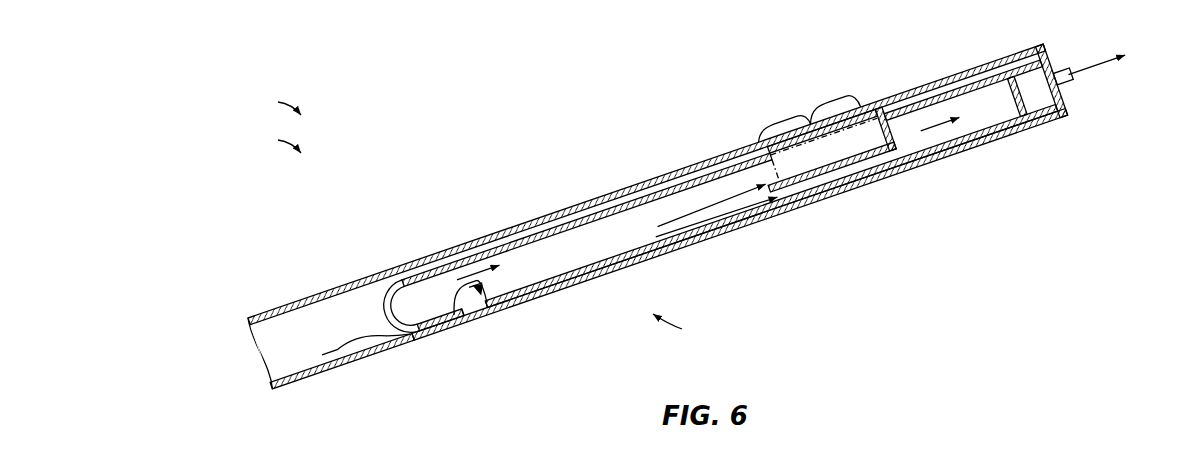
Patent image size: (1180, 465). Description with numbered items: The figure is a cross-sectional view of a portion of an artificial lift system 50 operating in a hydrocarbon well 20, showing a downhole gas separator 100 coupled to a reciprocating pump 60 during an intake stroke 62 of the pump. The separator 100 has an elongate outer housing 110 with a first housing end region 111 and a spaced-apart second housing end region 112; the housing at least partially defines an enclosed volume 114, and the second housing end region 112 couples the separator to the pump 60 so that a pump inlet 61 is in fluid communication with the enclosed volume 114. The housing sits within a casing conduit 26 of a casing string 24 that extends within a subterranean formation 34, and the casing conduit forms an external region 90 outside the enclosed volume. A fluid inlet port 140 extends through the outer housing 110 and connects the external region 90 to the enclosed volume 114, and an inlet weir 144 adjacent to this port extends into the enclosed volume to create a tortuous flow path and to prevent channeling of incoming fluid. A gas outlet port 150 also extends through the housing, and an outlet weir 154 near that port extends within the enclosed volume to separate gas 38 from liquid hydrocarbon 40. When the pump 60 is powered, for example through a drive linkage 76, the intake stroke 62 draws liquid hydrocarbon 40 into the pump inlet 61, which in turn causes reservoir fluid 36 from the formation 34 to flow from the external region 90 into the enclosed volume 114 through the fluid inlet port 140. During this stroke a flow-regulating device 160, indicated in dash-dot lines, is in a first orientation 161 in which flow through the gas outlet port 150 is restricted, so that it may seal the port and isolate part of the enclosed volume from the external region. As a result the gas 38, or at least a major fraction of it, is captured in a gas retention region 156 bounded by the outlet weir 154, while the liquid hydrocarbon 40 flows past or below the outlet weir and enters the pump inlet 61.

The hydrocarbon well 20 is at (274, 102).
The artificial lift system 50 is at (274, 140).
The casing string 24 is at (621, 232).
The casing conduit 26 is at (621, 232).
The subterranean formation 34 is at (313, 399).
The reservoir fluid 36 is at (343, 358).
The gas 38 is at (342, 347).
The liquid hydrocarbon 40 is at (365, 345).
The external region 90 is at (281, 350).
The downhole gas separator 100 is at (686, 327).
The outer housing 110 is at (703, 214).
The first housing end region 111 is at (380, 300).
The second housing end region 112 is at (960, 75).
The enclosed volume 114 is at (530, 255).
The fluid inlet port 140 is at (501, 330).
The inlet weir 144 is at (505, 303).
The gas outlet port 150 is at (787, 84).
The outlet weir 154 is at (829, 151).
The gas retention region 156 is at (826, 156).
The flow-regulating device 160 is at (861, 100).
The first orientation 161 is at (789, 107).
The reciprocating pump 60 is at (1058, 98).
The pump inlet 61 is at (1007, 108).
The intake stroke 62 is at (1094, 62).
The drive linkage 76 is at (1071, 84).